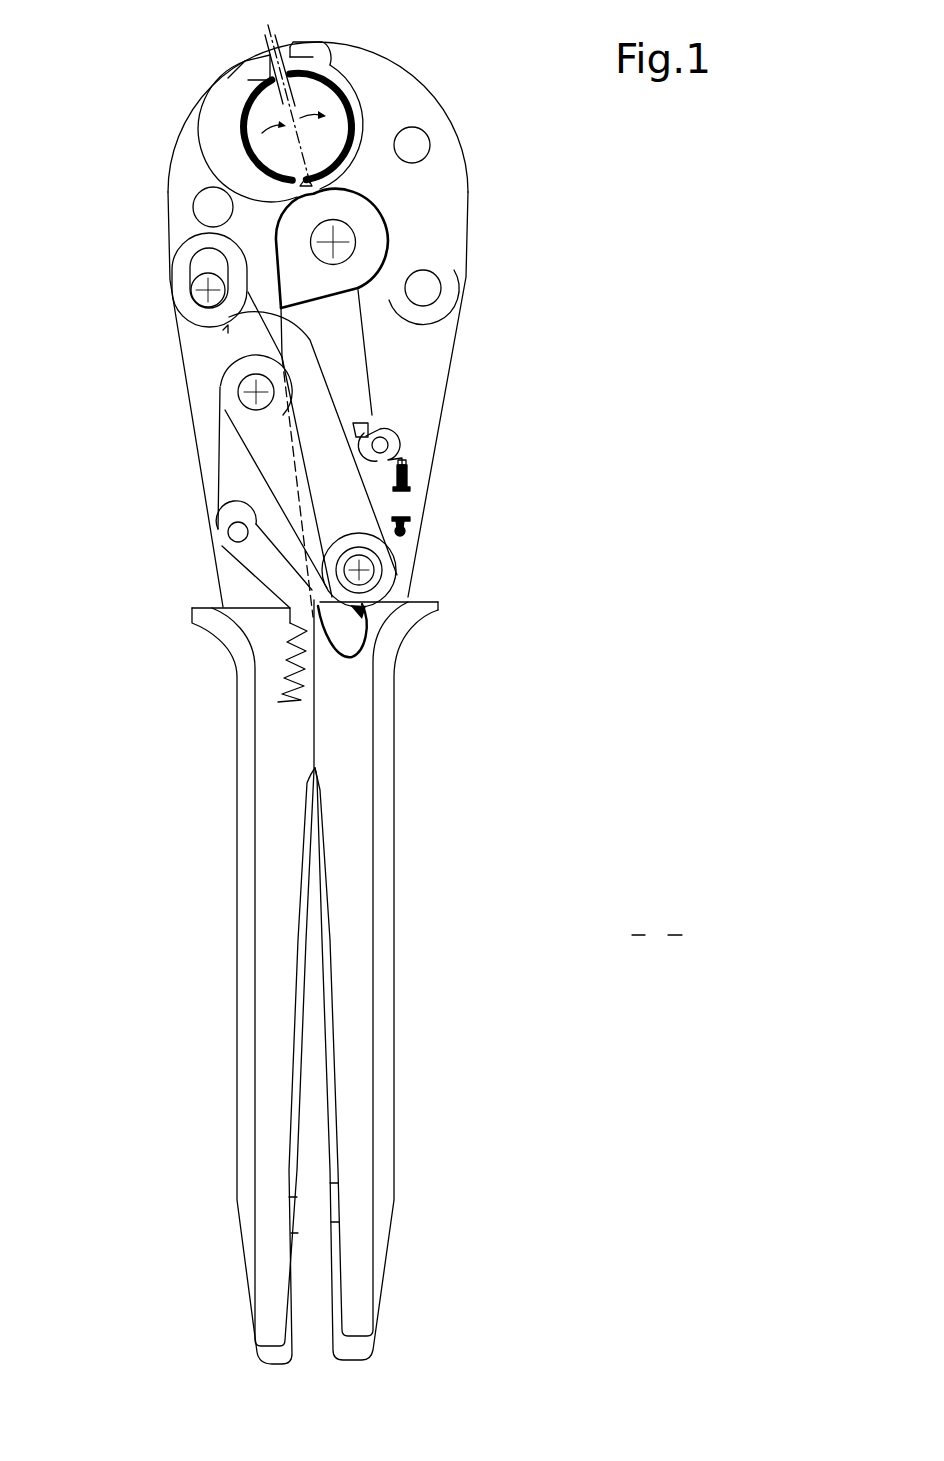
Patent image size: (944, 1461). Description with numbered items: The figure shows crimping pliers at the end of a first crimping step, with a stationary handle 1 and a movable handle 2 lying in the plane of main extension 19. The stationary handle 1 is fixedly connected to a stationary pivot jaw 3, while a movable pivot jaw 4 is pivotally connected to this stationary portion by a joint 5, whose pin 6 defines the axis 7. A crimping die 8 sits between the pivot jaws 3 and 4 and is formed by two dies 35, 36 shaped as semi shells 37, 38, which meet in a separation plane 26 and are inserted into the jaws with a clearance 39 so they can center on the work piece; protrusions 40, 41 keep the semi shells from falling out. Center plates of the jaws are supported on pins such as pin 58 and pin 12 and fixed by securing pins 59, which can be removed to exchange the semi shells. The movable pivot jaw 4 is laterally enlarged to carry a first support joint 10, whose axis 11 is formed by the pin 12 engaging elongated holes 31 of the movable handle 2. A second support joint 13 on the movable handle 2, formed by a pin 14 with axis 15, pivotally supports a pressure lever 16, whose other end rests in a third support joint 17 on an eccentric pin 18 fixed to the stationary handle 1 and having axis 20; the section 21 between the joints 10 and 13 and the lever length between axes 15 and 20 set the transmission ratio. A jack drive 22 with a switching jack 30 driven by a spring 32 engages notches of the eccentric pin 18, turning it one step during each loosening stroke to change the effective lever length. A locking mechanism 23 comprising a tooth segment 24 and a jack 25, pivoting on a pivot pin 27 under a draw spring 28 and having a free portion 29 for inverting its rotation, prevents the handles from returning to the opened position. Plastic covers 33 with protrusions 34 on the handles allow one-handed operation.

The stationary handle 1 is at (405, 1018).
The movable handle 2 is at (210, 1020).
The stationary pivot jaw 3 is at (393, 88).
The movable pivot jaw 4 is at (192, 137).
The joint 5 is at (365, 247).
The pin 6 is at (340, 253).
The axis 7 is at (345, 240).
The crimping die 8 is at (268, 40).
The first support joint 10 is at (313, 306).
The axis 11 is at (200, 297).
The pin 12 is at (223, 330).
The second support joint 13 is at (175, 405).
The pin 14 is at (238, 397).
The axis 15 is at (246, 390).
The pressure lever 16 is at (250, 465).
The third support joint 17 is at (413, 580).
The eccentric pin 18 is at (418, 600).
The plane of main extension 19 is at (657, 935).
The axis 20 is at (373, 567).
The section 21 is at (190, 352).
The jack drive 22 is at (250, 573).
The locking mechanism 23 is at (402, 430).
The tooth segment 24 is at (365, 415).
The jack 25 is at (380, 445).
The separation plane 26 is at (284, 44).
The pivot pin 27 is at (398, 445).
The draw spring 28 is at (412, 483).
The free portion 29 is at (330, 413).
The switching jack 30 is at (367, 623).
The elongated holes 31 is at (203, 265).
The spring 32 is at (291, 656).
The plastic covers 33 is at (243, 875).
The protrusions 34 is at (200, 620).
The die 35 is at (357, 77).
The die 36 is at (225, 110).
The semi shell 37 is at (350, 100).
The semi shell 38 is at (240, 155).
The clearance 39 is at (370, 127).
The protrusion 40 is at (258, 70).
The protrusion 41 is at (300, 183).
The pin 58 is at (423, 288).
The securing pin 59 is at (208, 204).